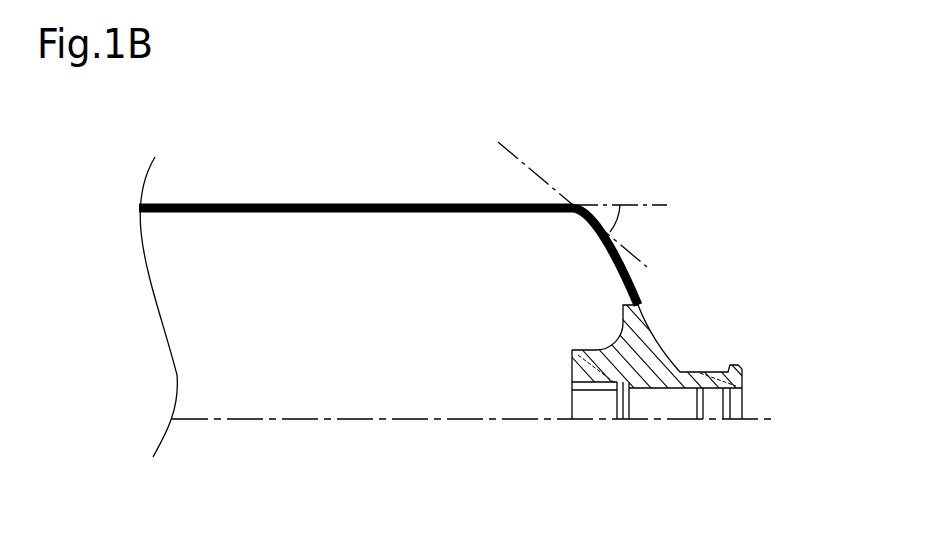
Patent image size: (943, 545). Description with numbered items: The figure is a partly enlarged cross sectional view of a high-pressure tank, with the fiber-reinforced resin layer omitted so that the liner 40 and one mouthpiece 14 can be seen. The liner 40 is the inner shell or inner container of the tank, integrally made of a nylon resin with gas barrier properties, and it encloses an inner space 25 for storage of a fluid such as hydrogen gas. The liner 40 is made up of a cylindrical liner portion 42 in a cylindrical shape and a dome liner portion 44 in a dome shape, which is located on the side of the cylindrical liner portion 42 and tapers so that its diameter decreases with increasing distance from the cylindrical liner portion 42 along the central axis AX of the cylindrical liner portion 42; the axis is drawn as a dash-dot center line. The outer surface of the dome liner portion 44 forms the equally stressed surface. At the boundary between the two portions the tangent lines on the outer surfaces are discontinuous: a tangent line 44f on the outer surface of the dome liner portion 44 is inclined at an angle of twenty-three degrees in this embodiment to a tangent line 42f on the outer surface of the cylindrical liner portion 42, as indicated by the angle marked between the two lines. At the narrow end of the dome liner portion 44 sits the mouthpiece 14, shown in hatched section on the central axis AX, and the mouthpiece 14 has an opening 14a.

The mouthpiece 14 is at (655, 404).
The opening 14a is at (590, 390).
The inner space 25 is at (388, 348).
The liner 40 is at (444, 234).
The cylindrical liner portion 42 is at (467, 214).
The tangent line 42f is at (640, 203).
The dome liner portion 44 is at (591, 256).
The tangent line 44f is at (525, 163).
The central axis AX is at (410, 419).